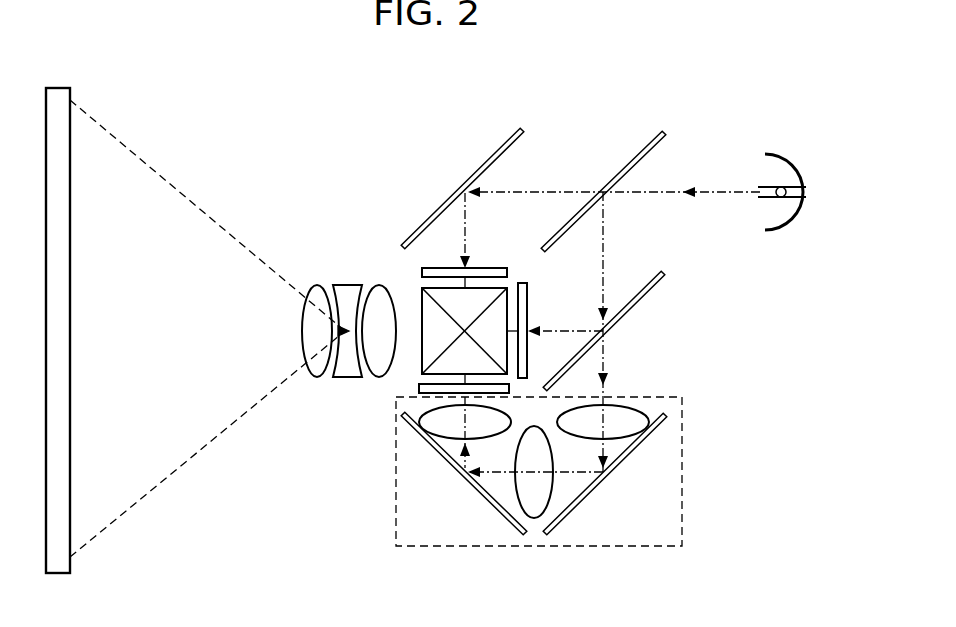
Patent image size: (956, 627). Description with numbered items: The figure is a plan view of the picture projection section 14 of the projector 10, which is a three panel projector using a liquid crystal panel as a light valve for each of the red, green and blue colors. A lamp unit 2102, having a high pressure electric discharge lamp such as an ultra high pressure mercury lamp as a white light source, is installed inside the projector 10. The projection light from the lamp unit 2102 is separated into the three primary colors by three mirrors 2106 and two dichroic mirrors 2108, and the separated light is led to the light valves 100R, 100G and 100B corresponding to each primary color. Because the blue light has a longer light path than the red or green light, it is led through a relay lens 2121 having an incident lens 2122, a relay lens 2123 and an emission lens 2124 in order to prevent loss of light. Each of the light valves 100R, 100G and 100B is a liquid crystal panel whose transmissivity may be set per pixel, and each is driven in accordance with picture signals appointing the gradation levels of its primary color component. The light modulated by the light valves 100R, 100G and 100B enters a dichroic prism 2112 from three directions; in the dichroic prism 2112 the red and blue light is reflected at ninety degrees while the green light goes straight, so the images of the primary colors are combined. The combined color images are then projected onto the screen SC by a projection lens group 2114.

The projector 10 is at (554, 343).
The picture projection section 14 is at (372, 149).
The screen SC is at (58, 561).
The lamp unit 2102 is at (775, 186).
The mirrors 2106 is at (487, 160).
The dichroic mirrors 2108 is at (623, 168).
The dichroic prism 2112 is at (415, 284).
The projection lens group 2114 is at (393, 279).
The light valve 100R is at (473, 266).
The light valve 100G is at (530, 297).
The light valve 100B is at (418, 387).
The relay lens 2121 is at (541, 477).
The incident lens 2122 is at (630, 406).
The relay lens 2123 is at (536, 518).
The emission lens 2124 is at (443, 432).